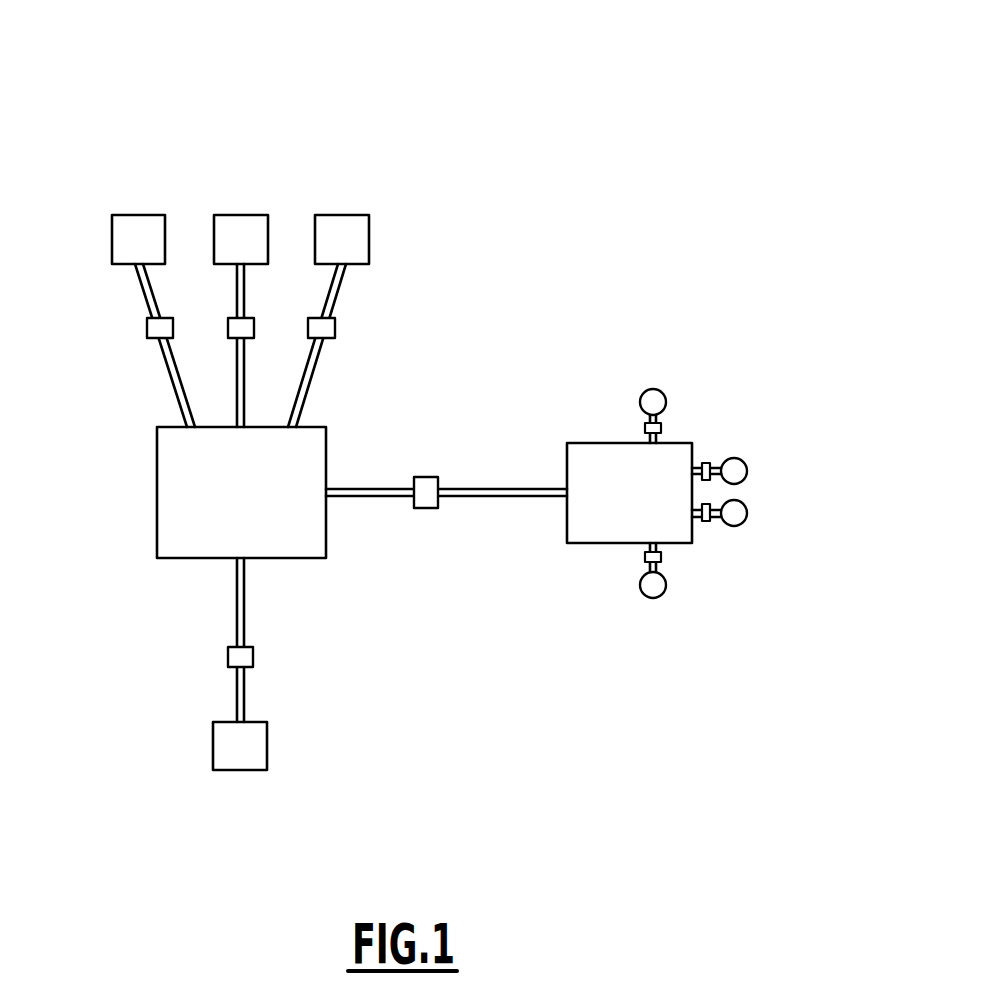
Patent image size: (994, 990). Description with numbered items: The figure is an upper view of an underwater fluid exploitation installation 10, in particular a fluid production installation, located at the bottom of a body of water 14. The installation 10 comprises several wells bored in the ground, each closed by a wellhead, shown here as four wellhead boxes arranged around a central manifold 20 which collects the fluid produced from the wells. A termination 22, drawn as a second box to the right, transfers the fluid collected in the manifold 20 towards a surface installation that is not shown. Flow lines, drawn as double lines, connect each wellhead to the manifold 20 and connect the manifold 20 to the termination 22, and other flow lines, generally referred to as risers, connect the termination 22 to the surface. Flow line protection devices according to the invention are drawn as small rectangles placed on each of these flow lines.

The installation 10 is at (563, 140).
The body of water 14 is at (550, 196).
The manifold 20 is at (157, 507).
The termination 22 is at (567, 527).